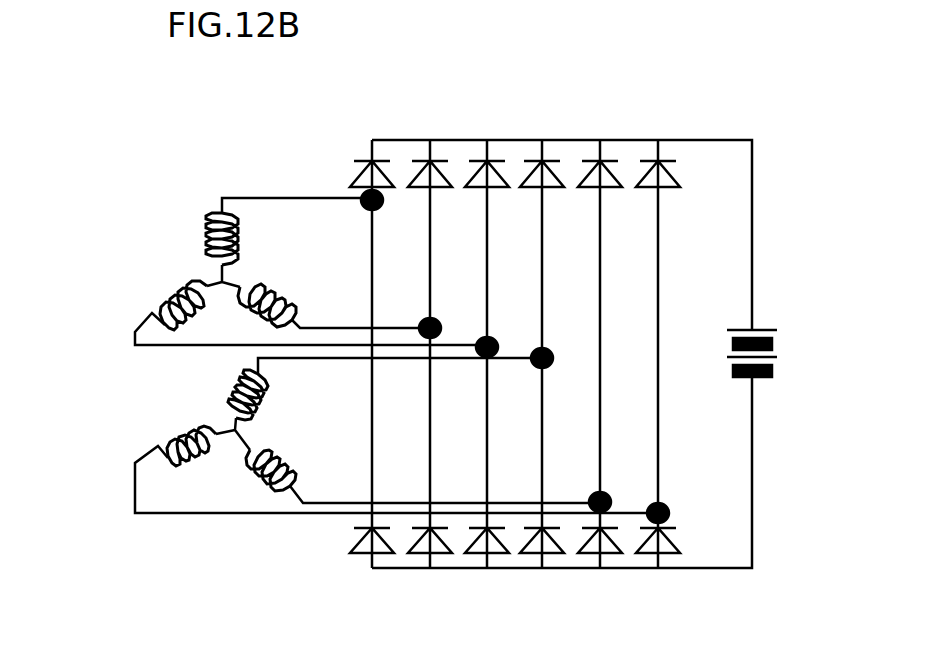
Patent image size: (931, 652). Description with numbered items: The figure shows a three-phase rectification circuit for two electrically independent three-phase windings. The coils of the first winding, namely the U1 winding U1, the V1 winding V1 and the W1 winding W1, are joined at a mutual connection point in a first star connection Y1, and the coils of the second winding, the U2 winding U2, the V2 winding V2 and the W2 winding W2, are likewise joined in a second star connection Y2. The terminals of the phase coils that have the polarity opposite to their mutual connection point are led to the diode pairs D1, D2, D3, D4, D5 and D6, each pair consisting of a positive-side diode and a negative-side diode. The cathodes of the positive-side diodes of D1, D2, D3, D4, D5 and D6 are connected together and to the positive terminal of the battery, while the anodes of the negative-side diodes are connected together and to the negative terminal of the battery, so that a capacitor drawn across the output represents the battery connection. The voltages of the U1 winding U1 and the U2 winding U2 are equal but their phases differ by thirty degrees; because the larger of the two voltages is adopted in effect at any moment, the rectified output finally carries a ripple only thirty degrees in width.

The first three-phase star connection Y1 is at (291, 271).
The U1 winding U1 is at (289, 231).
The V1 winding V1 is at (334, 297).
The W1 winding W1 is at (306, 305).
The second three-phase star connection Y2 is at (376, 435).
The U2 winding U2 is at (385, 389).
The V2 winding V2 is at (423, 471).
The W2 winding W2 is at (396, 457).
The diode pair D1 is at (402, 115).
The diode pair D2 is at (464, 115).
The diode pair D3 is at (525, 115).
The diode pair D4 is at (587, 115).
The diode pair D5 is at (648, 115).
The diode pair D6 is at (710, 115).